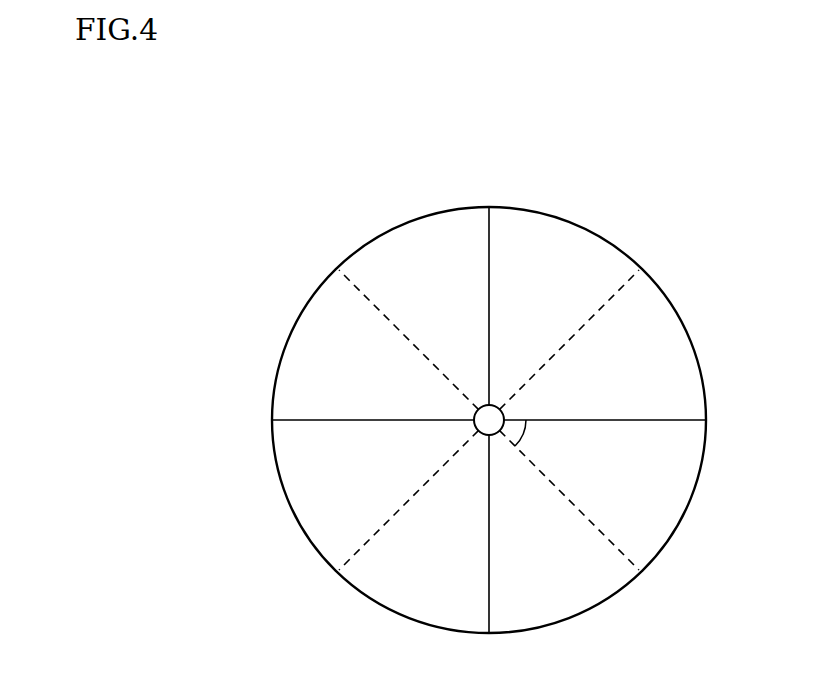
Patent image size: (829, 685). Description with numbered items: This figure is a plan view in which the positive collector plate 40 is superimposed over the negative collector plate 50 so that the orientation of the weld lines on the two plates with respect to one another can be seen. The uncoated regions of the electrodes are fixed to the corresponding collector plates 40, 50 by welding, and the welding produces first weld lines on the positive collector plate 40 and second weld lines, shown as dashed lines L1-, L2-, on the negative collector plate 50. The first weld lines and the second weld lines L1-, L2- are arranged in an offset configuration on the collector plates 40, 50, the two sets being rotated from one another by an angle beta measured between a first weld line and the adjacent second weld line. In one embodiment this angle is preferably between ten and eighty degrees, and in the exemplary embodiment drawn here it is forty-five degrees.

The positive collector plate 40 is at (489, 398).
The negative collector plate 50 is at (557, 218).
The second weld line L1- is at (634, 560).
The second weld line L2- is at (635, 277).